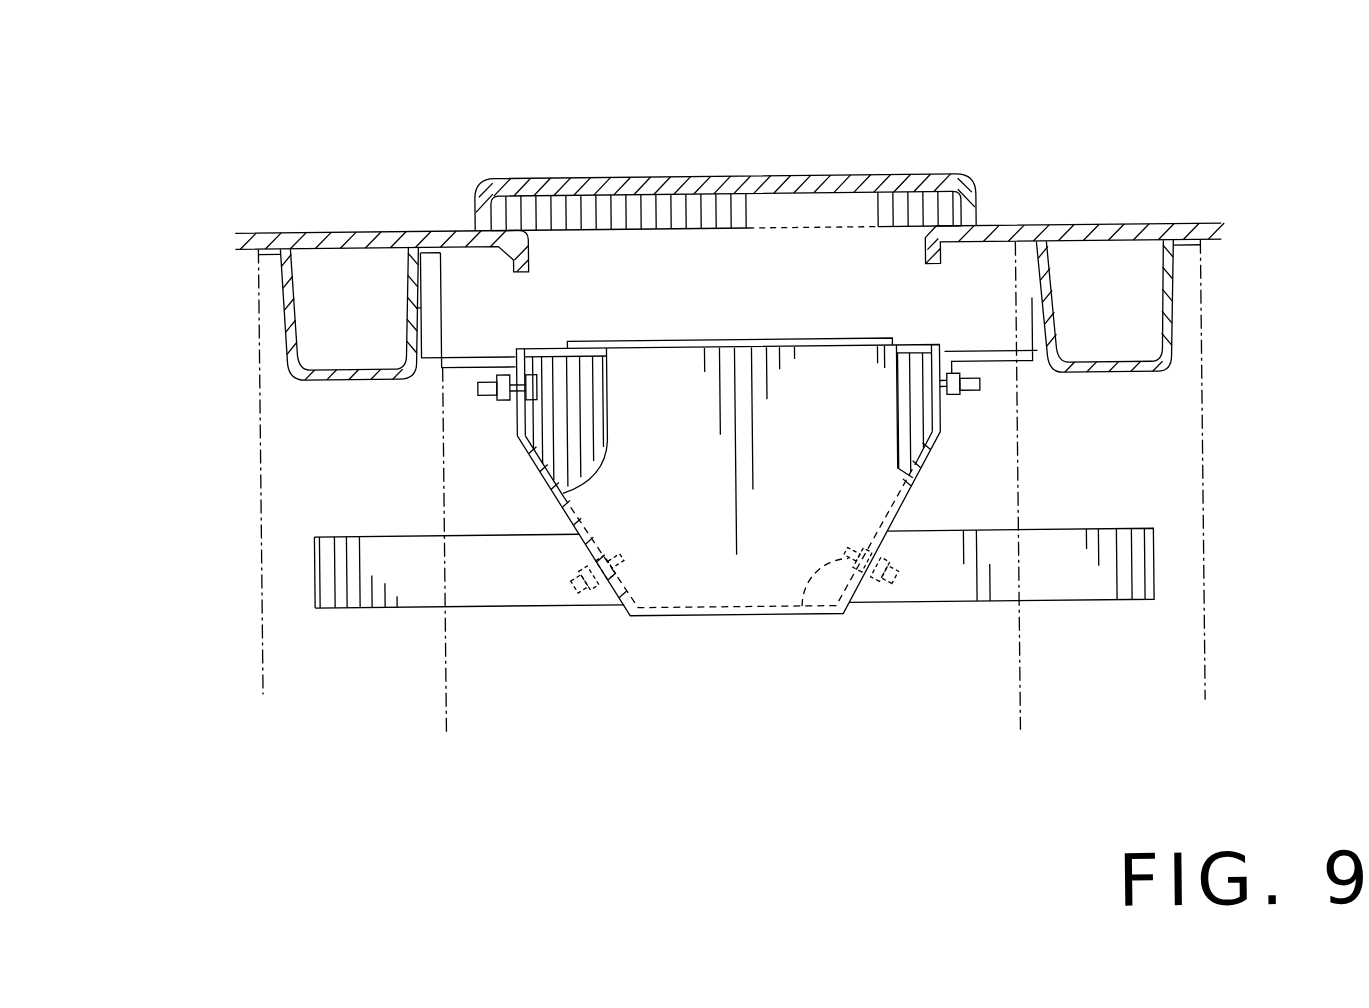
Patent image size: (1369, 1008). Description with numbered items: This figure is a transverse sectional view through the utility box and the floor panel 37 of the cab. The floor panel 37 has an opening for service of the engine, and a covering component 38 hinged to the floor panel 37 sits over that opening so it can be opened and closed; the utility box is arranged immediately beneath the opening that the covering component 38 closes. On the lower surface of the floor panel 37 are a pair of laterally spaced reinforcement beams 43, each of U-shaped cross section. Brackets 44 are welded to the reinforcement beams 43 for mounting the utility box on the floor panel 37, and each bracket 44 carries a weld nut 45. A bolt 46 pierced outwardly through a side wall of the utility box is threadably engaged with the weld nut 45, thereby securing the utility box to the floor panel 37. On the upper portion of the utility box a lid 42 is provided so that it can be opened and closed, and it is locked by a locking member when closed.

The floor panel 37 is at (1090, 229).
The covering component 38 is at (734, 176).
The lid 42 is at (657, 339).
The reinforcement beam 43 is at (282, 288).
The bracket 44 is at (458, 360).
The weld nut 45 is at (490, 398).
The bolt 46 is at (538, 388).